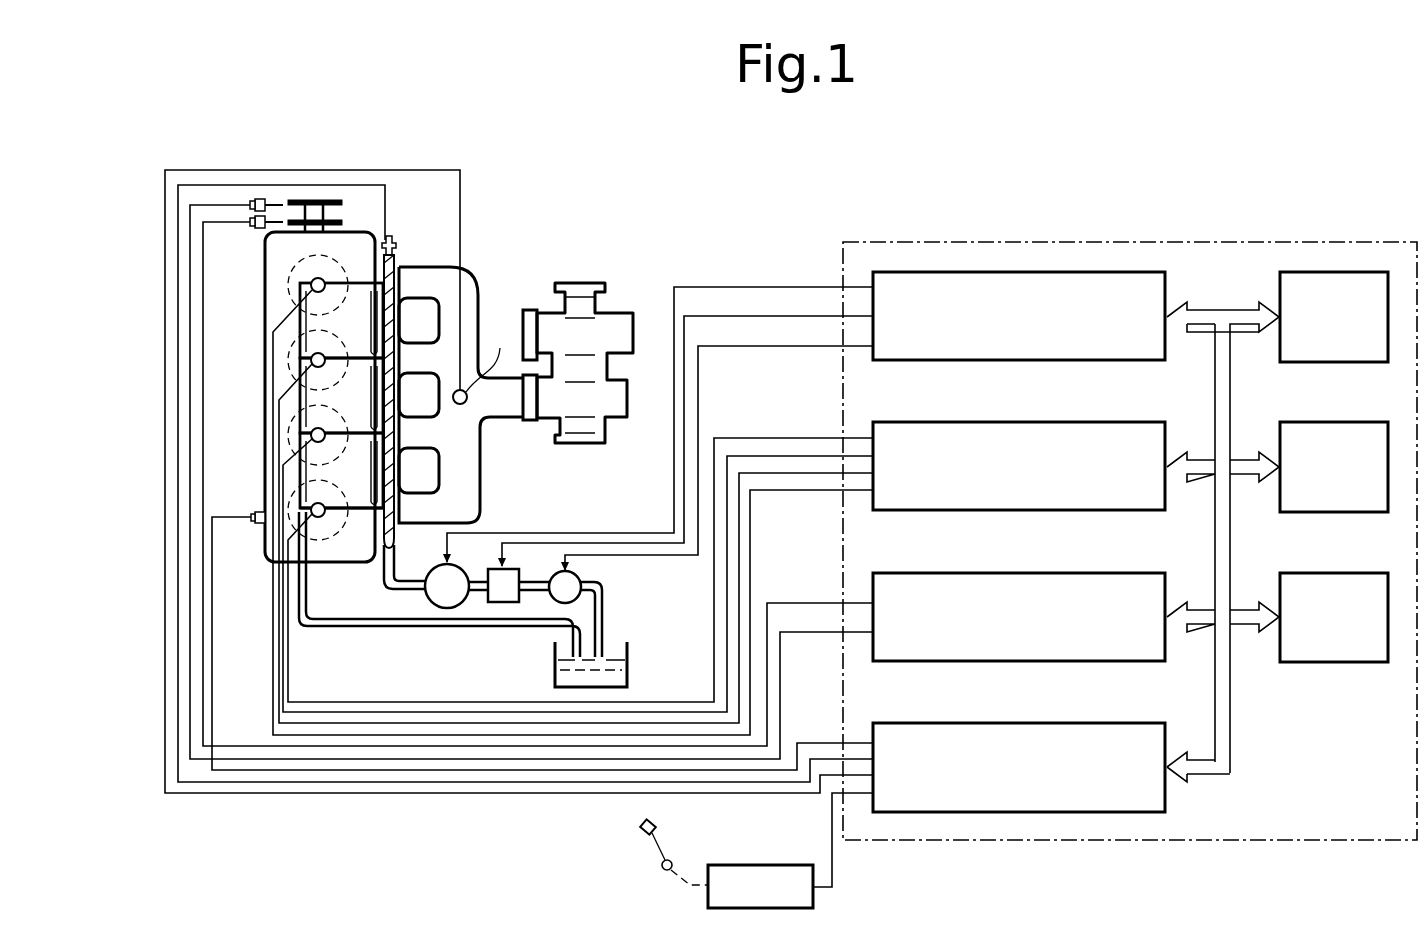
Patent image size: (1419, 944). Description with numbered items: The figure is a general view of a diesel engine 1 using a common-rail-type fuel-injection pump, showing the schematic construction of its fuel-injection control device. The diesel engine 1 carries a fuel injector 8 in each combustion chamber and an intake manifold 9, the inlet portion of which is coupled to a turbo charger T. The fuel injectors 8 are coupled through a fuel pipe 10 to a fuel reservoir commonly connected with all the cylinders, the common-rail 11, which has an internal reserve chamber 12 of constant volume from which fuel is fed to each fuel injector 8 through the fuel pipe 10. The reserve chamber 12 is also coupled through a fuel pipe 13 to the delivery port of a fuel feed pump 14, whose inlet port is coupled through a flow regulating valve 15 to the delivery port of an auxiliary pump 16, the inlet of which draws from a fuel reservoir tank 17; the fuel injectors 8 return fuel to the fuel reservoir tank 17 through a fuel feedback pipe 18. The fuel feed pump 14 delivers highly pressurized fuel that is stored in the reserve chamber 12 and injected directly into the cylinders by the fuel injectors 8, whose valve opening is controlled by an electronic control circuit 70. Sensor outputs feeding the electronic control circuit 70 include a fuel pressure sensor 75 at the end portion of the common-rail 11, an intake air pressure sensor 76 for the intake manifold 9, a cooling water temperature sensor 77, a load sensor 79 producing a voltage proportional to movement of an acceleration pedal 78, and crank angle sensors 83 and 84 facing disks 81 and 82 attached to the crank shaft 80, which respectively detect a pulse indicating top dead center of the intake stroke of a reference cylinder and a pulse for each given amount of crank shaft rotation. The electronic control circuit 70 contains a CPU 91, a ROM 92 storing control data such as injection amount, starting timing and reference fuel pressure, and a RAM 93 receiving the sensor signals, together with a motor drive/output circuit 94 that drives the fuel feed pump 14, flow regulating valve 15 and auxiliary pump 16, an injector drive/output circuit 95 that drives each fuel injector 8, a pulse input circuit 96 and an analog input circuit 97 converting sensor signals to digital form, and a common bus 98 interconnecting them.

The diesel engine 1 is at (270, 307).
The fuel injector 8 is at (314, 280).
The intake manifold 9 is at (475, 472).
The fuel pipe 10 is at (355, 278).
The common-rail 11 is at (399, 320).
The reserve chamber 12 is at (399, 398).
The fuel pipe 13 is at (384, 588).
The fuel feed pump 14 is at (437, 572).
The flow regulating valve 15 is at (511, 581).
The auxiliary pump 16 is at (590, 583).
The fuel reservoir tank 17 is at (628, 666).
The fuel feedback pipe 18 is at (392, 626).
The electronic control circuit 70 is at (845, 242).
The fuel pressure sensor 75 is at (394, 248).
The intake air pressure sensor 76 is at (488, 361).
The cooling water temperature sensor 77 is at (256, 514).
The acceleration pedal 78 is at (655, 826).
The load sensor 79 is at (775, 865).
The crank shaft 80 is at (305, 200).
The disk 81 is at (330, 200).
The disk 82 is at (342, 220).
The crank angle sensor 83 is at (262, 199).
The crank angle sensor 84 is at (262, 229).
The CPU 91 is at (1368, 364).
The ROM 92 is at (1368, 514).
The RAM 93 is at (1368, 664).
The motor drive/output circuit 94 is at (1142, 362).
The injector drive/output circuit 95 is at (1142, 512).
The pulse input circuit 96 is at (1142, 663).
The analog input circuit 97 is at (1167, 793).
The common bus 98 is at (1232, 752).
The turbo charger T is at (628, 403).